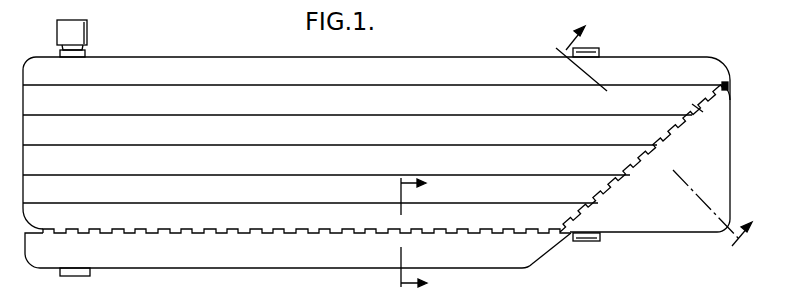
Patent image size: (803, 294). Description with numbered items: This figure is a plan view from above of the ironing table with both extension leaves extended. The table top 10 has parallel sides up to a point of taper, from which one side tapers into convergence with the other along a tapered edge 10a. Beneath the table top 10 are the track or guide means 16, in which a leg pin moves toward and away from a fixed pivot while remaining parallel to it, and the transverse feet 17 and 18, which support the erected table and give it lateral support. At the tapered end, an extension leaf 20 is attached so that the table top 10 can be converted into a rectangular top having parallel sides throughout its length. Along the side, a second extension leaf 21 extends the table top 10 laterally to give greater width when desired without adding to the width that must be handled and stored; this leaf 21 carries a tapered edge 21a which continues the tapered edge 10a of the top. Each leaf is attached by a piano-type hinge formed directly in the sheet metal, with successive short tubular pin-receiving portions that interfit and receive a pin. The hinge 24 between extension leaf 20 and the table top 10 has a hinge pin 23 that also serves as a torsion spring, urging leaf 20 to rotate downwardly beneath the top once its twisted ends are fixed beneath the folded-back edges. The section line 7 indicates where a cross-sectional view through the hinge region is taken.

The section line 7- 7 is at (648, 148).
The table top 10 is at (189, 57).
The tapered edge 10a is at (630, 177).
The track or guide means 16 is at (398, 234).
The transverse foot 17 is at (600, 53).
The transverse foot 18 is at (59, 50).
The extension leaf 20 is at (657, 223).
The extension leaf 21 is at (321, 259).
The tapered edge 21a is at (553, 247).
The hinge pin 23 is at (728, 86).
The hinge 24 is at (698, 110).